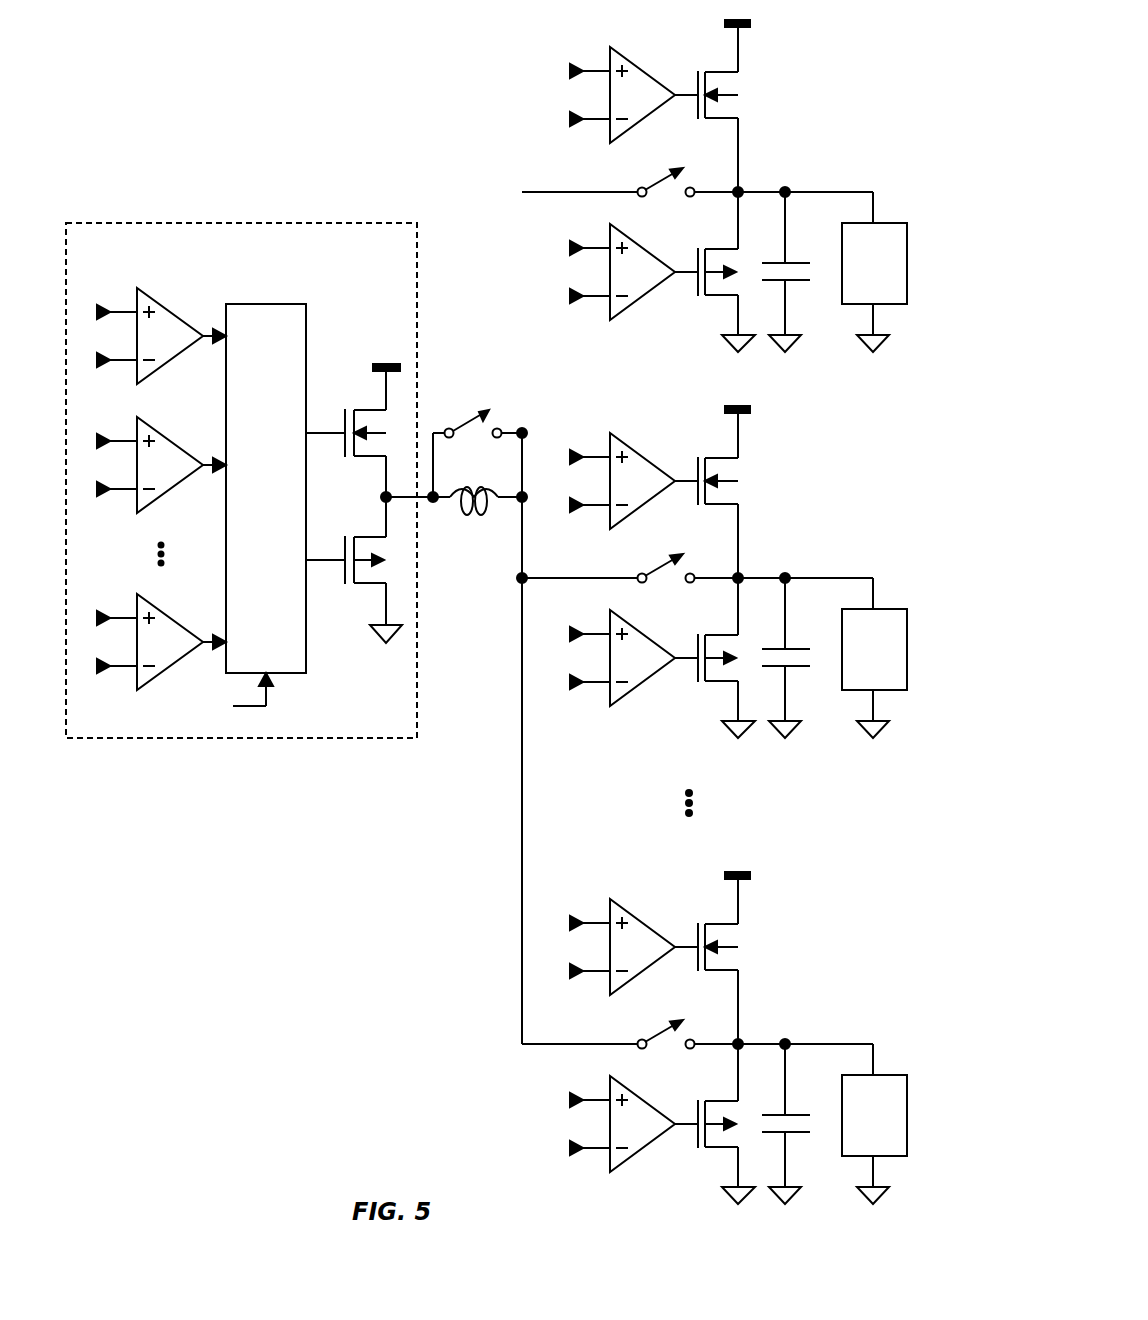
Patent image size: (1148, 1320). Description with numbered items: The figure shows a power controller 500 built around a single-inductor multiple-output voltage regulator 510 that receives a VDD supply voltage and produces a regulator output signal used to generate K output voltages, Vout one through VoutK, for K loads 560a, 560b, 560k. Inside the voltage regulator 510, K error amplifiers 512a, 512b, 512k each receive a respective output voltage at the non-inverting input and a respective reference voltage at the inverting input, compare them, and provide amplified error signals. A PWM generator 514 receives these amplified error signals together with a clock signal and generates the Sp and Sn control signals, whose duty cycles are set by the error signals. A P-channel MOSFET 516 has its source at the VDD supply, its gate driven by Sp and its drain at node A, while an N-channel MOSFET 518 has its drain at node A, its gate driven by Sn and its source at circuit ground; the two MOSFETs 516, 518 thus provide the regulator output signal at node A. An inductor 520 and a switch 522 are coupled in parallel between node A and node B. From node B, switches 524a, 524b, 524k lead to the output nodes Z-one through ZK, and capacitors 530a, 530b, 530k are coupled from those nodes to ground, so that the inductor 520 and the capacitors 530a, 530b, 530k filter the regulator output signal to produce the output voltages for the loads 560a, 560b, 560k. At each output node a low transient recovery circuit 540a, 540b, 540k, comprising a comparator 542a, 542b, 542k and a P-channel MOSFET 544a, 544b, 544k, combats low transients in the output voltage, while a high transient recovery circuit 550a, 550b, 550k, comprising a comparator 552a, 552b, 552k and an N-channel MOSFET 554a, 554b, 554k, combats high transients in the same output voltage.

The power controller 500 is at (158, 122).
The single-inductor multiple-output (SIMO) voltage regulator 510 is at (236, 223).
The error amplifier 512a is at (172, 312).
The error amplifier 512b is at (172, 439).
The error amplifier 512k is at (172, 617).
The PWM generator 514 is at (262, 303).
The P-channel MOSFET 516 is at (345, 409).
The N-channel MOSFET 518 is at (345, 537).
The inductor 520 is at (464, 482).
The switch 522 is at (452, 423).
The switch 524a is at (647, 186).
The switch 524b is at (647, 572).
The switch 524k is at (647, 1038).
The capacitor 530a is at (802, 261).
The capacitor 530b is at (802, 647).
The capacitor 530k is at (802, 1113).
The low transient recovery circuit 540a is at (694, 144).
The low transient recovery circuit 540b is at (694, 530).
The low transient recovery circuit 540k is at (694, 996).
The comparator 542a is at (648, 68).
The comparator 542b is at (648, 454).
The comparator 542k is at (648, 920).
The P-channel MOSFET 544a is at (703, 68).
The P-channel MOSFET 544b is at (703, 454).
The P-channel MOSFET 544k is at (703, 920).
The high transient recovery circuit 550a is at (694, 321).
The high transient recovery circuit 550b is at (694, 707).
The high transient recovery circuit 550k is at (694, 1173).
The comparator 552a is at (648, 245).
The comparator 552b is at (648, 631).
The comparator 552k is at (648, 1097).
The N-channel MOSFET 554a is at (703, 245).
The N-channel MOSFET 554b is at (703, 631).
The N-channel MOSFET 554k is at (703, 1097).
The load 560a is at (890, 222).
The load 560b is at (890, 608).
The load 560k is at (890, 1074).